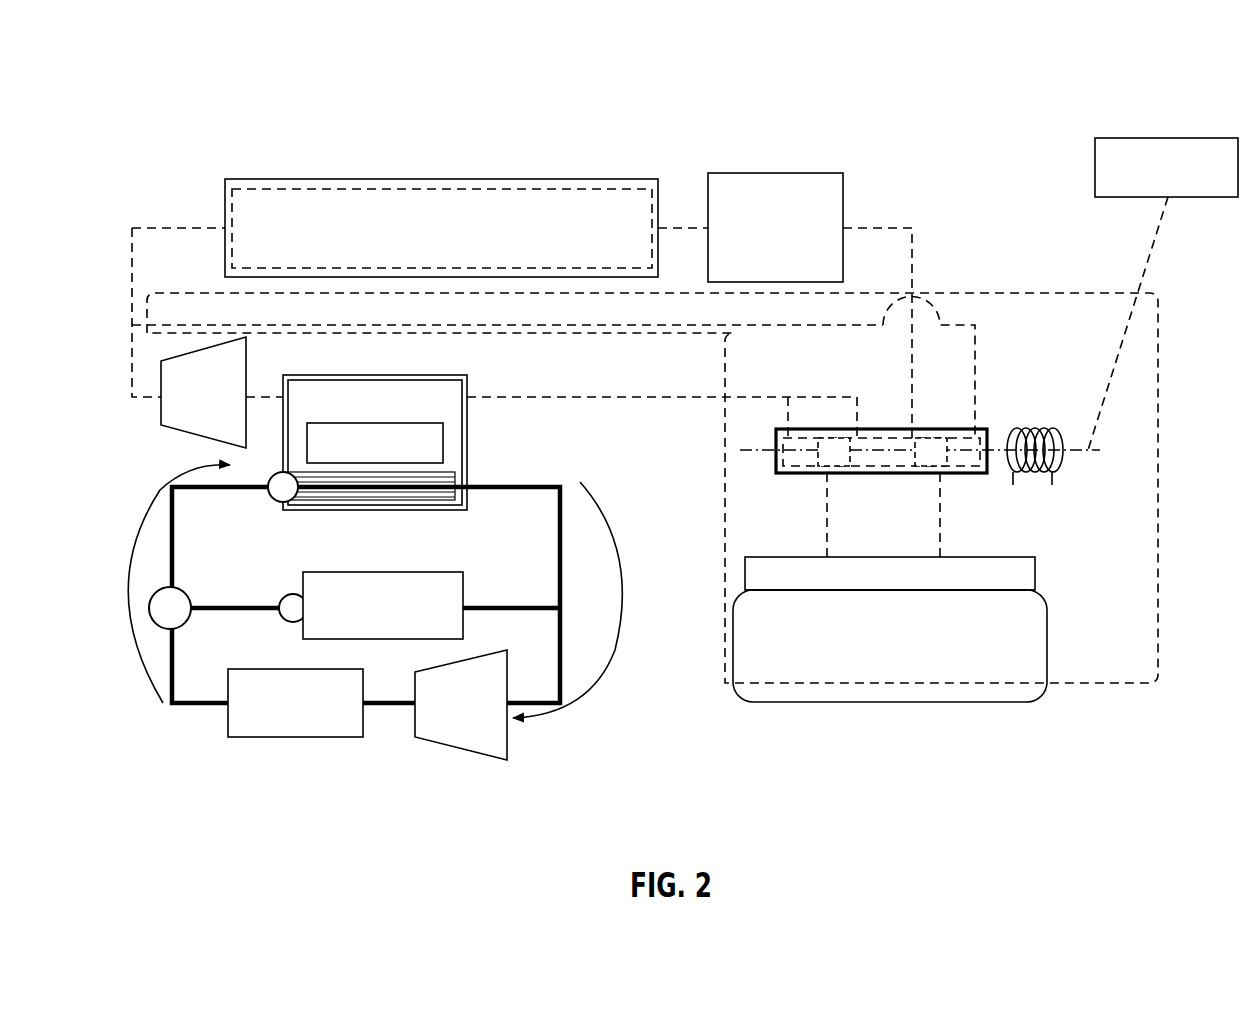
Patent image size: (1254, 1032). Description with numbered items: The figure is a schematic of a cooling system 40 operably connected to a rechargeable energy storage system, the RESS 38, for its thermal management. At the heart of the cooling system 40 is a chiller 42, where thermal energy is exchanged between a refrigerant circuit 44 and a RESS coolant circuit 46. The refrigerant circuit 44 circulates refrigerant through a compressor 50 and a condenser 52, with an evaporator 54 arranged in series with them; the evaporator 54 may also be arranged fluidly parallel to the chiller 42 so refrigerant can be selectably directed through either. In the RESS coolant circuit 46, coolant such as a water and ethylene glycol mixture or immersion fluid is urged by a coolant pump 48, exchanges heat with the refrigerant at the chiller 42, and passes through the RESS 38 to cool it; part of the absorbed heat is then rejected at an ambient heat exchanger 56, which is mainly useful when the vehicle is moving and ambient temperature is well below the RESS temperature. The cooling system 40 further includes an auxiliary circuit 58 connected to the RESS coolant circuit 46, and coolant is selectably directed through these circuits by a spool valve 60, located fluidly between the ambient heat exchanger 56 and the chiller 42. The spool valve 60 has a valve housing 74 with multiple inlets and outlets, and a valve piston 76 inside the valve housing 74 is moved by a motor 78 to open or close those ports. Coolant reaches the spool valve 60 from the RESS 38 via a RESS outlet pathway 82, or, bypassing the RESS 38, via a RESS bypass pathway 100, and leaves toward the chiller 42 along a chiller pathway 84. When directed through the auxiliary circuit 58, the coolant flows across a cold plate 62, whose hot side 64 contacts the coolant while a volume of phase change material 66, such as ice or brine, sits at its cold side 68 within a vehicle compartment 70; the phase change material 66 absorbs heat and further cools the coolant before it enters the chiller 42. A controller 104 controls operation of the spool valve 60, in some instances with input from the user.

The RESS 38 is at (302, 203).
The cooling system 40 is at (657, 762).
The chiller 42 is at (455, 413).
The refrigerant circuit 44 is at (375, 658).
The RESS coolant circuit 46 is at (745, 122).
The coolant pump 48 is at (165, 408).
The compressor 50 is at (475, 733).
The condenser 52 is at (290, 723).
The evaporator 54 is at (323, 585).
The ambient heat exchanger 56 is at (818, 190).
The auxiliary circuit 58 is at (939, 560).
The spool valve 60 is at (894, 458).
The cold plate 62 is at (852, 624).
The hot side 64 is at (782, 545).
The phase change material 66 is at (862, 665).
The cold side 68 is at (893, 592).
The vehicle compartment 70 is at (938, 624).
The valve housing 74 is at (920, 475).
The valve piston 76 is at (929, 440).
The motor 78 is at (1045, 430).
The RESS outlet pathway 82 is at (915, 245).
The chiller pathway 84 is at (650, 398).
The RESS bypass pathway 100 is at (838, 325).
The controller 104 is at (1165, 138).